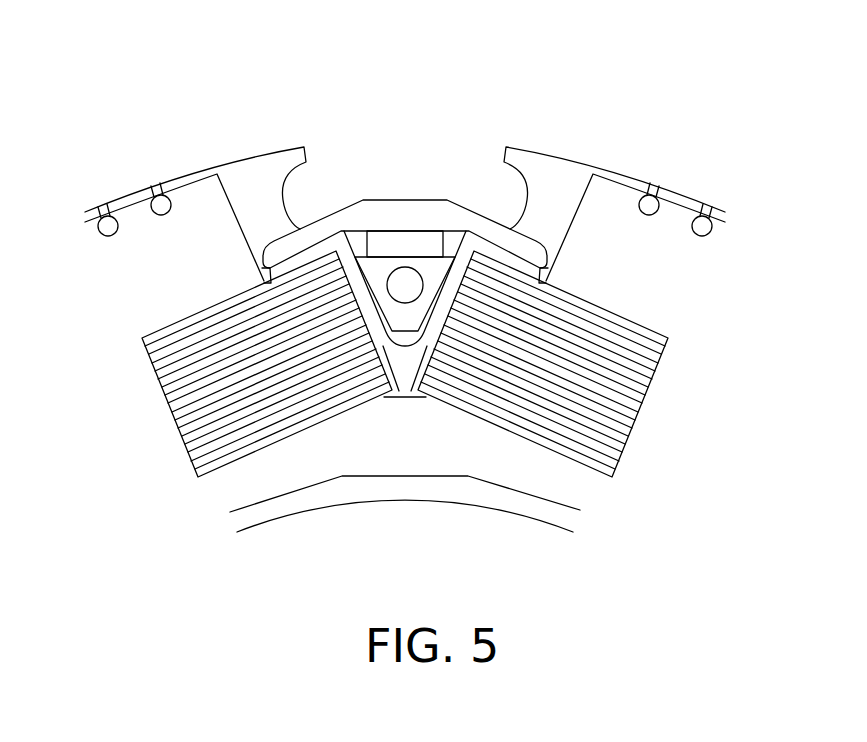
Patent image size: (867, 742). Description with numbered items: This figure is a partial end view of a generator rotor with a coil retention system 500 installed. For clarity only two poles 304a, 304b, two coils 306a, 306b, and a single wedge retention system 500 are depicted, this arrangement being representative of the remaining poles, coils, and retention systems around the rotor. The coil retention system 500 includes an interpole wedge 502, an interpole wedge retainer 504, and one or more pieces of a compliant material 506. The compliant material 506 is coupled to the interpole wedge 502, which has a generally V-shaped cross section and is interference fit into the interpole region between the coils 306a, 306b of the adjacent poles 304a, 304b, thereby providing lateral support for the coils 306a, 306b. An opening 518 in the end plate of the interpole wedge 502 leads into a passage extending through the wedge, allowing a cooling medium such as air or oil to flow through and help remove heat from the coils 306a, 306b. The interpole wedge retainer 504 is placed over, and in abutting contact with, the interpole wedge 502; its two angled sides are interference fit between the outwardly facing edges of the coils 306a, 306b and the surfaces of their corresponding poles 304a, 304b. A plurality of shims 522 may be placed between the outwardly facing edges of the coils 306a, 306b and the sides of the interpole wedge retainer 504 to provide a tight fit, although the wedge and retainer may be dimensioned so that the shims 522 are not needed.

The coil retention system 500 is at (413, 139).
The interpole wedge 502 is at (418, 253).
The interpole wedge retainer 504 is at (342, 197).
The compliant material 506 is at (409, 344).
The opening 518 is at (403, 278).
The shims 522 is at (262, 274).
The pole 304a is at (262, 150).
The pole 304b is at (567, 131).
The coil 306a is at (158, 332).
The coil 306b is at (652, 332).